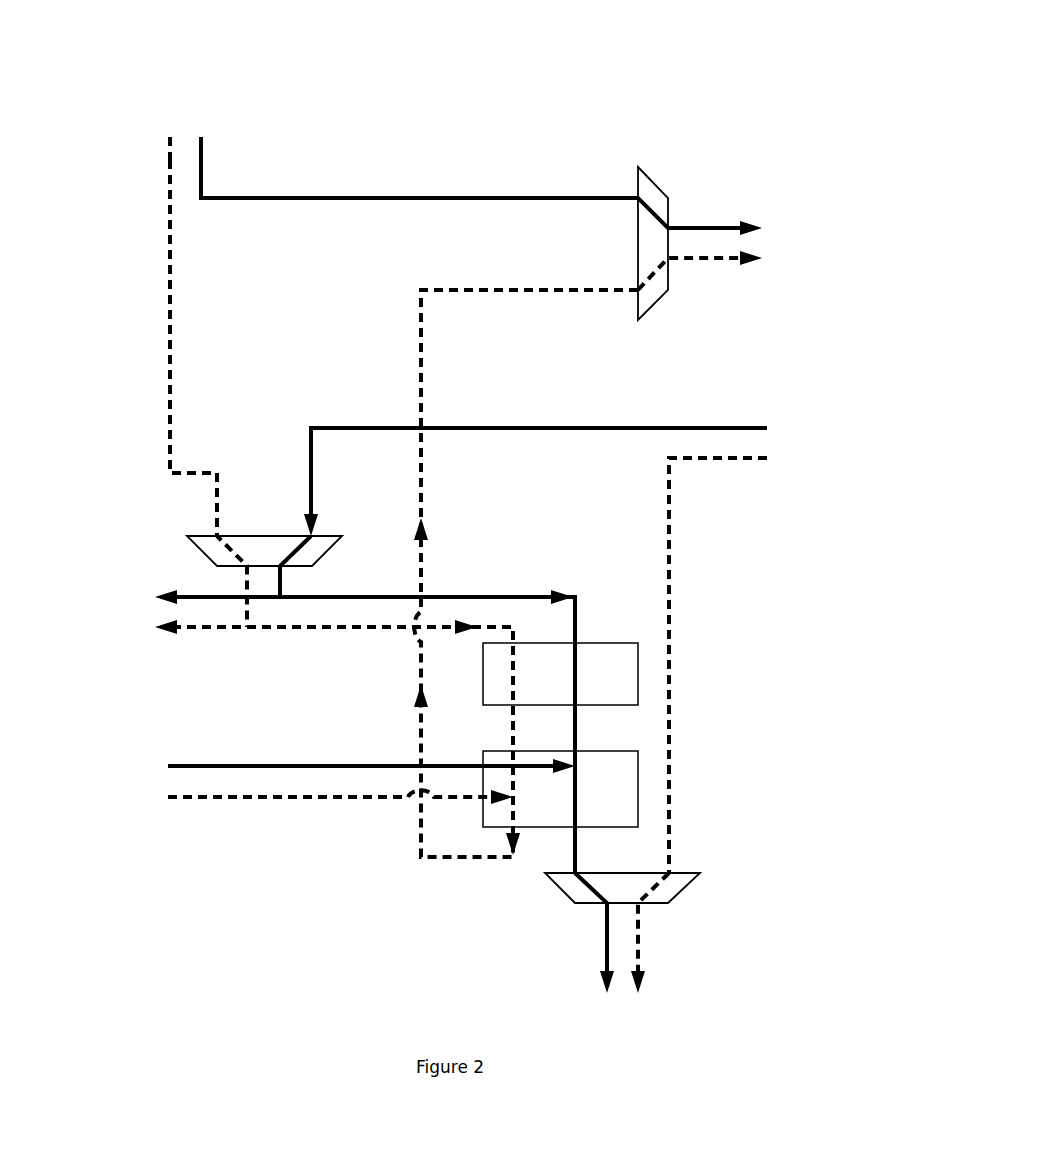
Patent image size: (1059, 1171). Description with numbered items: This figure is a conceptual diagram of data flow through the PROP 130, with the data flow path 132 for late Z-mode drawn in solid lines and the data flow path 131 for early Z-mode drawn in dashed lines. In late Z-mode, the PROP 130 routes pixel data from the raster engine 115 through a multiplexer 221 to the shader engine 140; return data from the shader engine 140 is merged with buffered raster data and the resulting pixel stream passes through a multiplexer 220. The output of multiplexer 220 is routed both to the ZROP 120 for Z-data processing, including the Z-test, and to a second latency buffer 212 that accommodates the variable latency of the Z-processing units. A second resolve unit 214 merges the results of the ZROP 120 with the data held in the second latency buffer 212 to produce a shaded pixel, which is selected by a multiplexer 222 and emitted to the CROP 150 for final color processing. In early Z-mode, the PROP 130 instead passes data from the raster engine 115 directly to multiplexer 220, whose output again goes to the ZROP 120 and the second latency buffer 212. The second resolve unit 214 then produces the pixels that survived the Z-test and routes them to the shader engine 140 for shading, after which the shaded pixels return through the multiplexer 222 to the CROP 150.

The raster engine 115 is at (190, 121).
The ZROP 120 is at (318, 731).
The PROP 130 is at (568, 76).
The data flow path for early Z-mode 131 is at (170, 242).
The data flow path for late Z-mode 132 is at (358, 197).
The shader engine 140 is at (556, 538).
The CROP 150 is at (622, 959).
The second latency buffer 212 is at (632, 674).
The second resolve unit 214 is at (632, 781).
The multiplexer 220 is at (194, 535).
The multiplexer 221 is at (638, 173).
The third multiplexer 222 is at (699, 872).